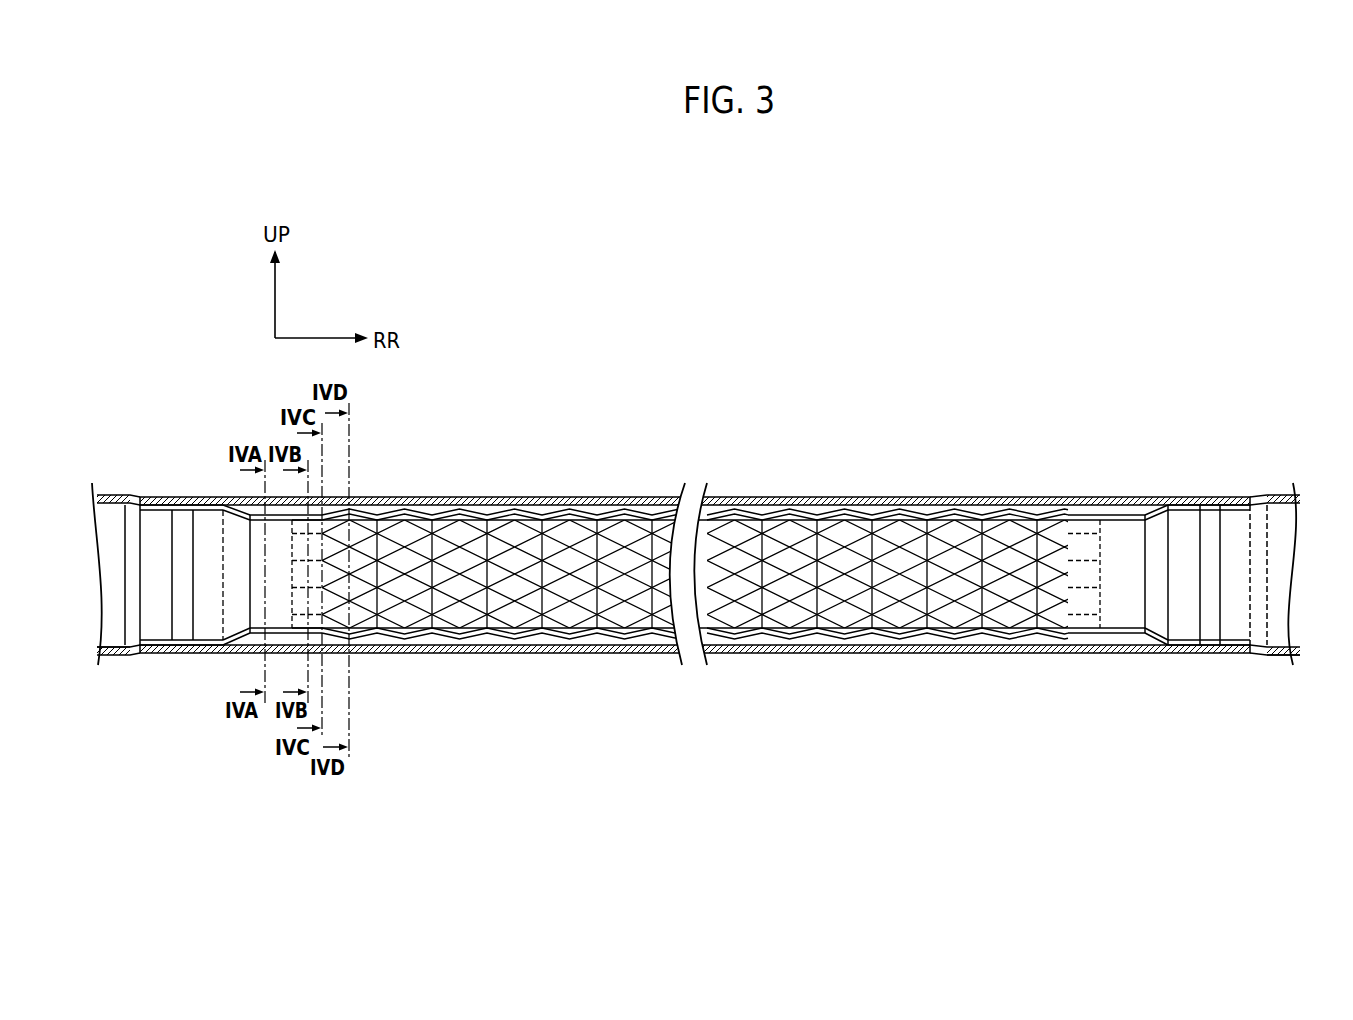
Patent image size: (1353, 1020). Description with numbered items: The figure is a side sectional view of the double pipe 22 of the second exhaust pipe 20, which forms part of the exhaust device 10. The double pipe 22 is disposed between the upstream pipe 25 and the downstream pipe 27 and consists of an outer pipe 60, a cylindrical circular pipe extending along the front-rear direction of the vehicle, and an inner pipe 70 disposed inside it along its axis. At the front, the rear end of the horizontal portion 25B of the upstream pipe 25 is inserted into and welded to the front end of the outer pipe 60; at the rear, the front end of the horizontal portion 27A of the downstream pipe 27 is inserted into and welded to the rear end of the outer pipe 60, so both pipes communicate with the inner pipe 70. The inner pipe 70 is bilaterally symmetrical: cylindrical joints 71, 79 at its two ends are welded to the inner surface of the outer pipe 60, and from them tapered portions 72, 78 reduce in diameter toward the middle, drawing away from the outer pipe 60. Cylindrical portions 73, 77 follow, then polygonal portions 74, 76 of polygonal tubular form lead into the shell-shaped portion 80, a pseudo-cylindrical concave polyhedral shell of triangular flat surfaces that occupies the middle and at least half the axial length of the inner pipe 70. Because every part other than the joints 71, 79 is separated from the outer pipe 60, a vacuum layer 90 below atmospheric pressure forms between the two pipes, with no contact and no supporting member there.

The exhaust device 10 is at (1276, 343).
The second exhaust pipe 20 is at (1221, 399).
The double pipe 22 is at (951, 493).
The upstream pipe 25 is at (116, 491).
The horizontal portion 25B is at (112, 655).
The downstream pipe 27 is at (1283, 493).
The horizontal portion 27A is at (1283, 652).
The outer pipe 60 is at (847, 500).
The inner pipe 70 is at (760, 510).
The joint 71 is at (200, 633).
The tapered portion 72 is at (232, 632).
The cylindrical portion 73 is at (250, 633).
The polygonal portion 74 is at (300, 627).
The polygonal portion 76 is at (1082, 622).
The cylindrical portion 77 is at (1123, 622).
The tapered portion 78 is at (1153, 622).
The joint 79 is at (1185, 633).
The shell-shaped portion 80 is at (603, 515).
The vacuum layer 90 is at (487, 513).